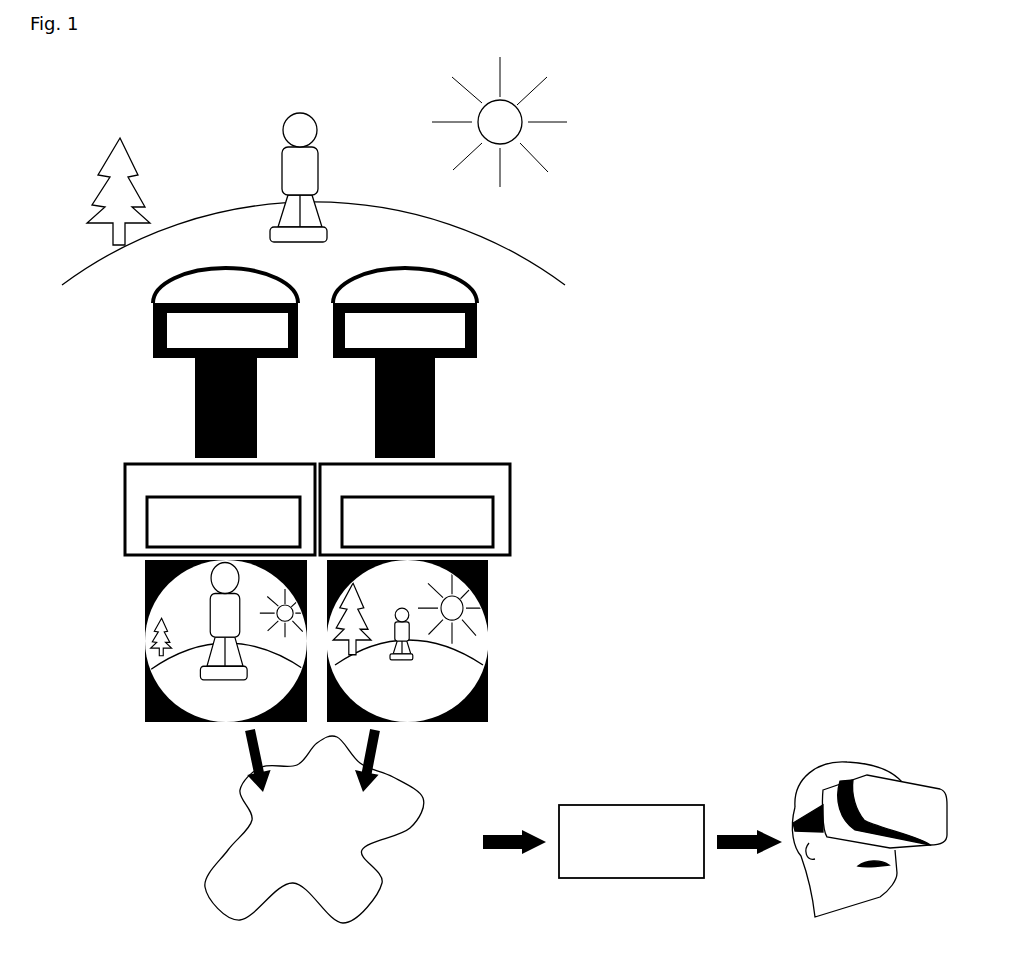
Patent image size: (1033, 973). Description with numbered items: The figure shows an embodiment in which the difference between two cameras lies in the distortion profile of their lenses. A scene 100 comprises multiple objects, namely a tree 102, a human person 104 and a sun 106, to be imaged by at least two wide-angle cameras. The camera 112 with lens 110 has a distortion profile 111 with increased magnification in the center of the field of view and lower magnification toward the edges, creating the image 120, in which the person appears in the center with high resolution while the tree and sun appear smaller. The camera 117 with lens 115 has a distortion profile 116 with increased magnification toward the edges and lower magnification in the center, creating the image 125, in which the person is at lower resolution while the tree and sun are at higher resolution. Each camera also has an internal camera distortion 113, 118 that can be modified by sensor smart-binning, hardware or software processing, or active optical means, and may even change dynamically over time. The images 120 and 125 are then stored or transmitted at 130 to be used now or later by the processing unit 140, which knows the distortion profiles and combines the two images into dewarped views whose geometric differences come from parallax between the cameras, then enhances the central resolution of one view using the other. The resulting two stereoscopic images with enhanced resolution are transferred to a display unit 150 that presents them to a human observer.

The scene 100 is at (313, 178).
The tree 102 is at (129, 191).
The human person 104 is at (319, 177).
The sun 106 is at (499, 122).
The lens 110 is at (225, 363).
The distortion profile 111 is at (227, 330).
The camera 112 is at (220, 509).
The distortion 113 is at (223, 522).
The lens 115 is at (405, 363).
The distortion profile 116 is at (405, 330).
The camera 117 is at (415, 509).
The distortion 118 is at (417, 522).
The image 120 is at (227, 641).
The image 125 is at (408, 641).
The image storage or transmission 130 is at (314, 826).
The processing unit 140 is at (632, 841).
The display unit 150 is at (869, 839).